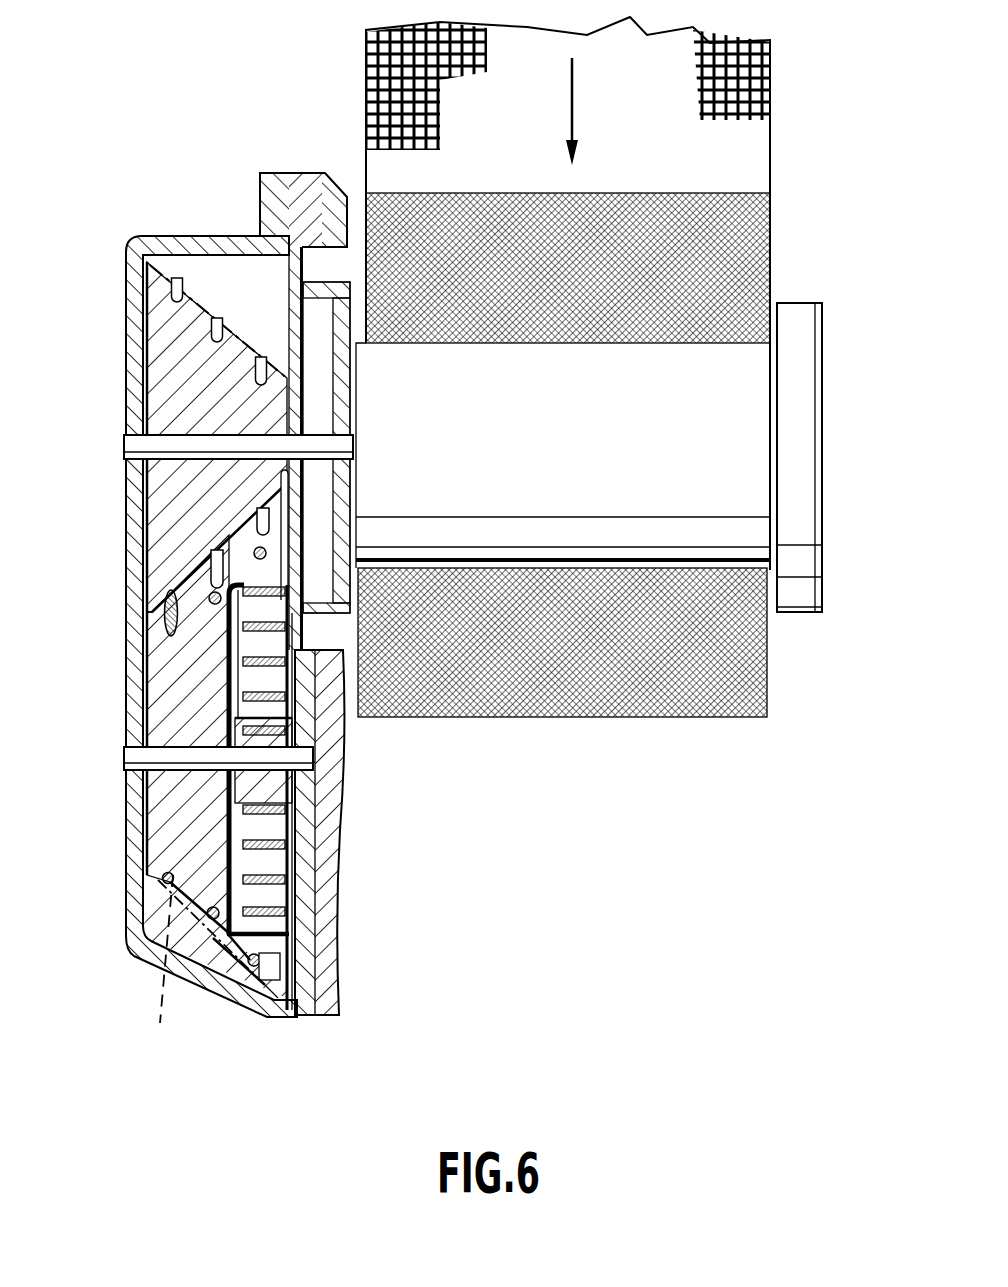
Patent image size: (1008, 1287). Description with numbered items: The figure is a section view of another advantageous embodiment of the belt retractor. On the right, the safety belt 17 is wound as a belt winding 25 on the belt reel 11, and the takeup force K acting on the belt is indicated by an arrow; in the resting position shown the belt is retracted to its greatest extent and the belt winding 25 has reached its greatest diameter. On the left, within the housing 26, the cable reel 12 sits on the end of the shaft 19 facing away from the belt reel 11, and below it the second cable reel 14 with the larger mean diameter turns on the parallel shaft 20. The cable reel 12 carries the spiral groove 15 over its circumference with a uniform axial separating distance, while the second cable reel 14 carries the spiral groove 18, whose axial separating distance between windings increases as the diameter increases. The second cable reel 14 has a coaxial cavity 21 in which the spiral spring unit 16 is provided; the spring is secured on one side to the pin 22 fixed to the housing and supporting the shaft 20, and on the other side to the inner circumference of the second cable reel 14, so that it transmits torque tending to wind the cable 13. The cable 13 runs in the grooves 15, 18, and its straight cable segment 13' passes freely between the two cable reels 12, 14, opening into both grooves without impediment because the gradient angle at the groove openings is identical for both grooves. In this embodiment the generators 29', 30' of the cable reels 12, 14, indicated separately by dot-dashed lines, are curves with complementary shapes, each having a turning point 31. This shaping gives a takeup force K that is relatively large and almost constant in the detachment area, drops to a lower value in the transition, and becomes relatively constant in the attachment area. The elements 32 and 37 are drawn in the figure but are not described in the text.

The belt reel 11 is at (763, 406).
The cable reel 12 is at (158, 374).
The cable 13 is at (112, 896).
The straight cable segment 13' is at (115, 613).
The second cable reel 14 is at (165, 833).
The spiral groove 15 is at (176, 282).
The spiral spring unit 16 is at (273, 888).
The safety belt 17 is at (743, 152).
The spiral groove 18 is at (212, 912).
The shaft 19 is at (347, 447).
The shaft 20 is at (152, 772).
The coaxial cavity 21 is at (228, 862).
The pin 22 is at (302, 790).
The belt winding 25 is at (770, 231).
The housing 26 is at (136, 274).
The generator 29' is at (237, 380).
The generator 30' is at (154, 967).
The turning point 31 is at (240, 348).
The arm 32 is at (215, 937).
The plate 37 is at (272, 582).
The takeup force K is at (572, 108).